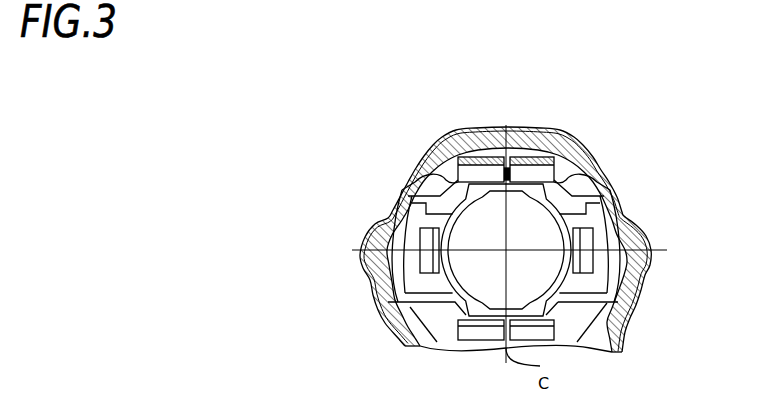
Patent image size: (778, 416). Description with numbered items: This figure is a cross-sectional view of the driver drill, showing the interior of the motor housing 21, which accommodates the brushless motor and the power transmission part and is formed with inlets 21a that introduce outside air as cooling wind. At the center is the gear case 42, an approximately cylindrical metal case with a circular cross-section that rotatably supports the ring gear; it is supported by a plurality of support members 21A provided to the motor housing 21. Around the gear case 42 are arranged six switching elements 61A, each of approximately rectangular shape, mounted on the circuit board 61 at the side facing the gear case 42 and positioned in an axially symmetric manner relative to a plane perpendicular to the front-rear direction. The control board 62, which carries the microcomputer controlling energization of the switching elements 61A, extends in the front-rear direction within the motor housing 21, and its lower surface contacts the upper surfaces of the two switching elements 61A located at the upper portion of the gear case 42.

The motor housing 21 is at (630, 232).
The inlets 21a is at (610, 199).
The support members 21A is at (590, 302).
The gear case 42 is at (560, 214).
The circuit board 61 is at (418, 216).
The switching element 61A is at (518, 173).
The control board 62 is at (481, 158).